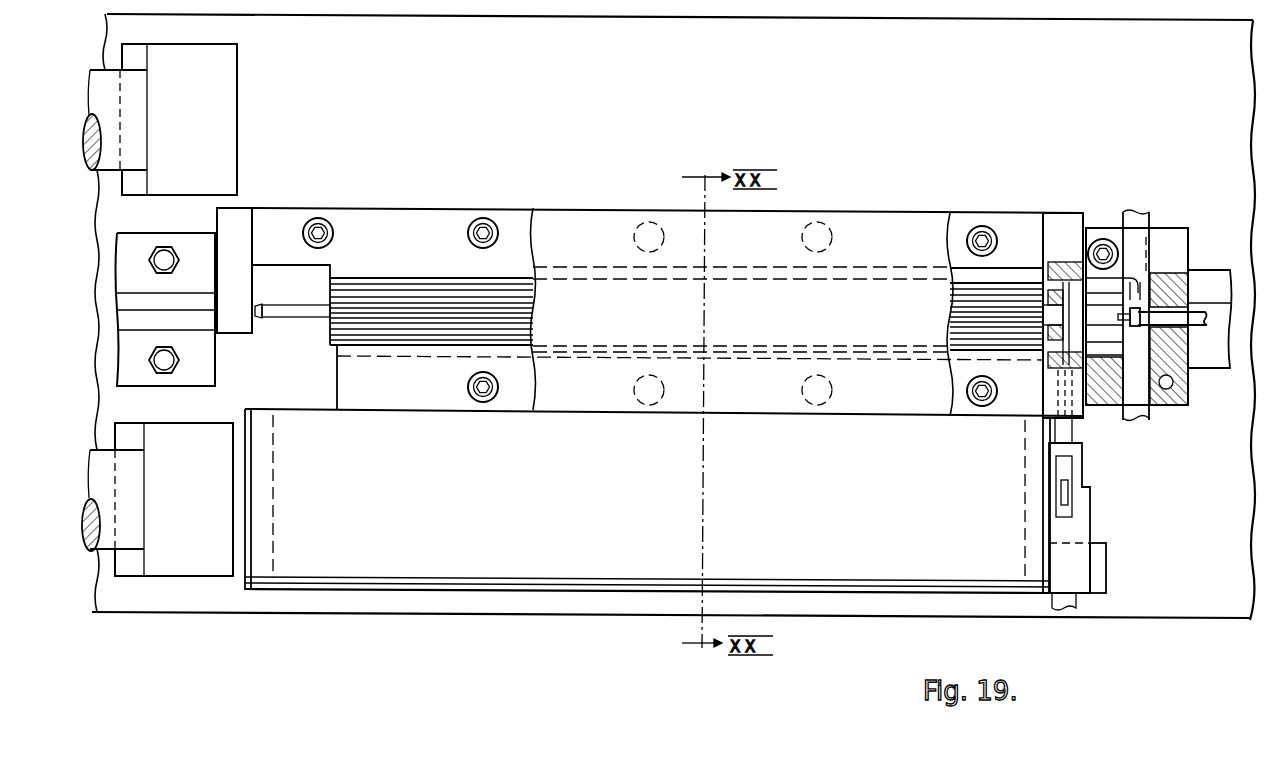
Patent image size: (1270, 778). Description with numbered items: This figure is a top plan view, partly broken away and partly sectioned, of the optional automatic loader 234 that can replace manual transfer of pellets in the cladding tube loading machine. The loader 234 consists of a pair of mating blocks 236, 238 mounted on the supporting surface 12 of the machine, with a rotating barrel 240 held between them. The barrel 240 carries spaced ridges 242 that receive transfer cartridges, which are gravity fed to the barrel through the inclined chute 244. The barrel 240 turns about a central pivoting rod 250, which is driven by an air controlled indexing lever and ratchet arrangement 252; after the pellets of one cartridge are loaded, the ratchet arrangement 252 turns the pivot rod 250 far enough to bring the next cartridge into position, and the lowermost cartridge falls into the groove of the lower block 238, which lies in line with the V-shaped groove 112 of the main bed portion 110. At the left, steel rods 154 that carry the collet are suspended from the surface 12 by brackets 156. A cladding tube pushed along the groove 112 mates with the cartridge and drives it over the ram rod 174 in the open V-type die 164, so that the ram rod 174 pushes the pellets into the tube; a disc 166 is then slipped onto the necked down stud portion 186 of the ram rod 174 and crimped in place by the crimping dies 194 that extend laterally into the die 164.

The surface 12 is at (1178, 610).
The main bed portion 110 is at (195, 363).
The V-shaped groove 112 is at (133, 300).
The steel rods 154 is at (107, 90).
The brackets 156 is at (215, 102).
The open V-type die 164 is at (1198, 211).
The disc 166 is at (1142, 300).
The ram rod 174 is at (1200, 335).
The necked down stud portion 186 is at (1128, 318).
The crimping dies 194 is at (1135, 212).
The automatic loader 234 is at (907, 206).
The mating block 236 is at (937, 222).
The lower block 238 is at (1024, 224).
The rotating barrel 240 is at (364, 284).
The spaced ridges 242 is at (421, 300).
The inclined chute 244 is at (878, 572).
The central pivoting rod 250 is at (290, 312).
The indexing lever and ratchet arrangement 252 is at (1075, 463).